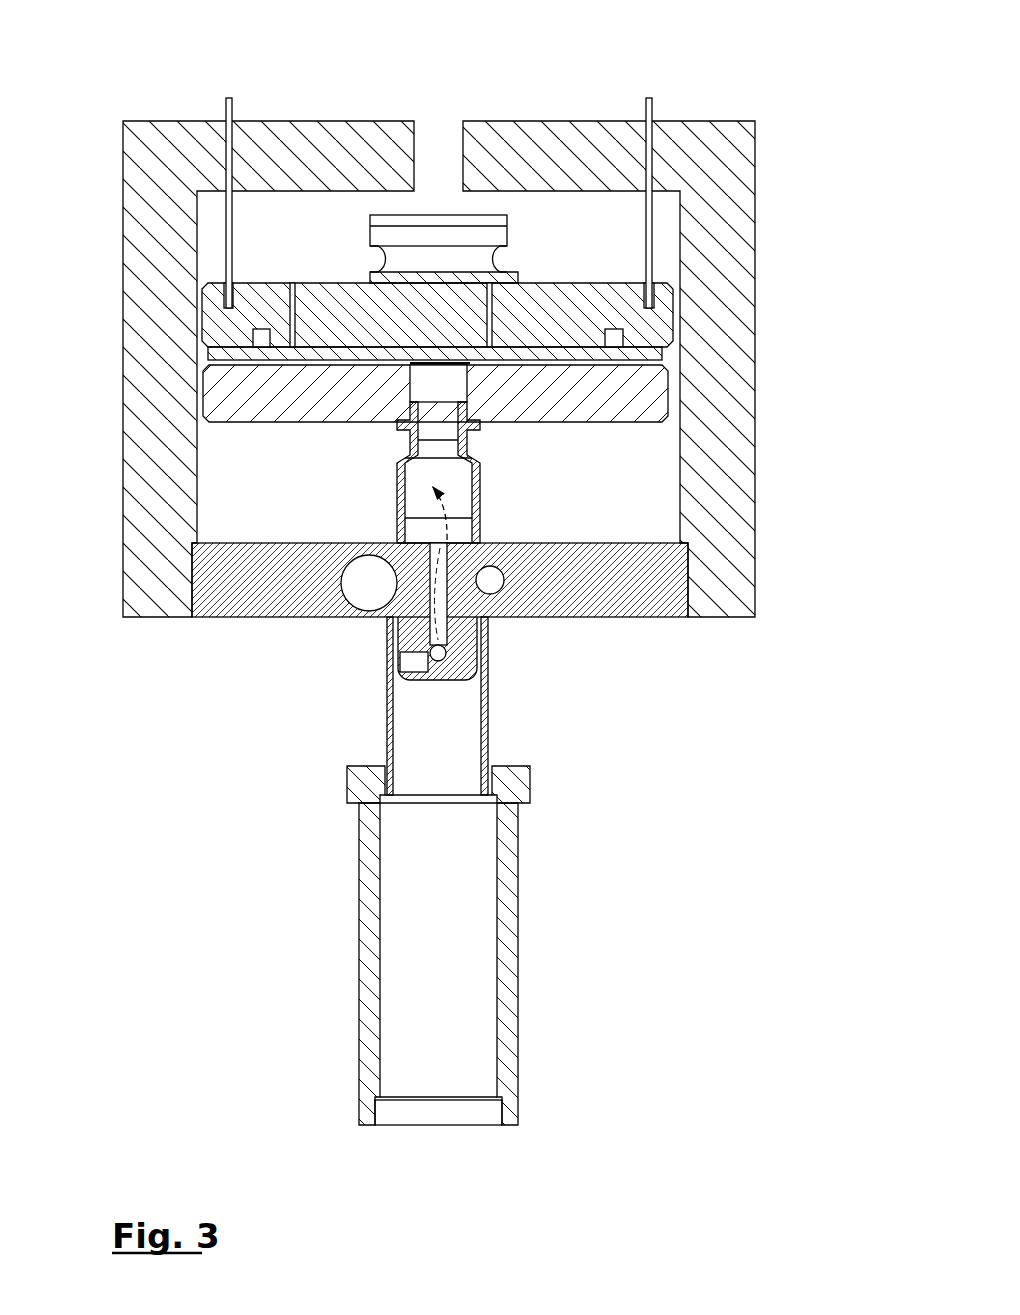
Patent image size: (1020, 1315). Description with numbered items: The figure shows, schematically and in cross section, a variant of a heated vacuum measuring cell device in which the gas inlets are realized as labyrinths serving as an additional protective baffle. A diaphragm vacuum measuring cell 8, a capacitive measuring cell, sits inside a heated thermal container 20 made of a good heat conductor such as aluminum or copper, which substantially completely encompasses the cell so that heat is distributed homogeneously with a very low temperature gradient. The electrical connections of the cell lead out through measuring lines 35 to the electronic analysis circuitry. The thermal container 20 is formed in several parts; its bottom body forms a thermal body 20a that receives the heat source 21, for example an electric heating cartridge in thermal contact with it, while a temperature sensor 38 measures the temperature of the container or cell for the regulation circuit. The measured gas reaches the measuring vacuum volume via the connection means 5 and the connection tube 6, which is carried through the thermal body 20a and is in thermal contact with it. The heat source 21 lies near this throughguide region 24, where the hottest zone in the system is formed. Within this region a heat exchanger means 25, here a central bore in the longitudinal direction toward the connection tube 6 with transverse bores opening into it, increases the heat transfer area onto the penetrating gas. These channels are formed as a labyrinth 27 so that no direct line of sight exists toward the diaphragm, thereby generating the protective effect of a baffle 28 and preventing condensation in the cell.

The thermal container 20 is at (766, 281).
The thermal body 20a is at (268, 583).
The measuring lines 35 is at (235, 99).
The diaphragm vacuum measuring cell 8 is at (583, 247).
The connection means 5 is at (427, 440).
The connection tube 6 is at (403, 507).
The heat source 21 is at (369, 583).
The temperature sensor 38 is at (493, 585).
The throughguide region 24 is at (507, 632).
The heat exchanger means 25 is at (463, 633).
The labyrinth 27 is at (438, 653).
The baffle 28 is at (415, 663).